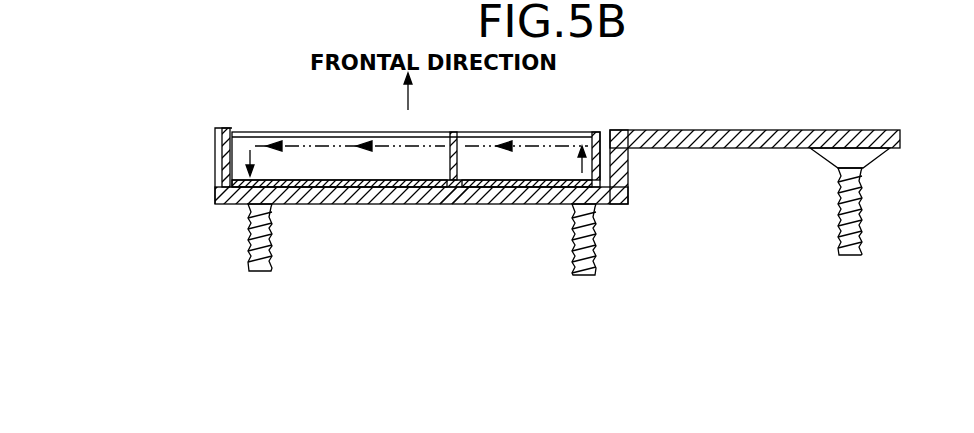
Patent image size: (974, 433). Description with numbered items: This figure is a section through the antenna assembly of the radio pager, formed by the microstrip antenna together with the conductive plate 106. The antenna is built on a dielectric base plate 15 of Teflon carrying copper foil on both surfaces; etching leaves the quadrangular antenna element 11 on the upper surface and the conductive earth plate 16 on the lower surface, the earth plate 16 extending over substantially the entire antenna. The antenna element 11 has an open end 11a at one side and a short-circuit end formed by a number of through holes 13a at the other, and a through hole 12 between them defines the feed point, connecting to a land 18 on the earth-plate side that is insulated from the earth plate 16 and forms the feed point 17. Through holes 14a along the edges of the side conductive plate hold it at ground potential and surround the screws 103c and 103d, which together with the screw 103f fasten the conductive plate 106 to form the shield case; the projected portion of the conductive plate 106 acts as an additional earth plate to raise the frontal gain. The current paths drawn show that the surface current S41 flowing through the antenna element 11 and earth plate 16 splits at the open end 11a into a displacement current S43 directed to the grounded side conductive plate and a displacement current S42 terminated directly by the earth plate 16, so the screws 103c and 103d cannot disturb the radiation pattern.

The antenna element 11 is at (540, 130).
The open end 11a is at (272, 131).
The through hole 12 is at (454, 132).
The through holes 13a is at (612, 165).
The through holes 14a is at (215, 158).
The dielectric base plate 15 is at (287, 172).
The earth plate 16 is at (346, 195).
The feed point 17 is at (450, 197).
The land 18 is at (465, 181).
The screw 103c is at (248, 226).
The screw 103d is at (598, 224).
The screw 103f is at (863, 193).
The conductive plate 106 is at (710, 130).
The surface current S41 is at (372, 150).
The displacement current S42 is at (262, 158).
The displacement current S43 is at (248, 150).